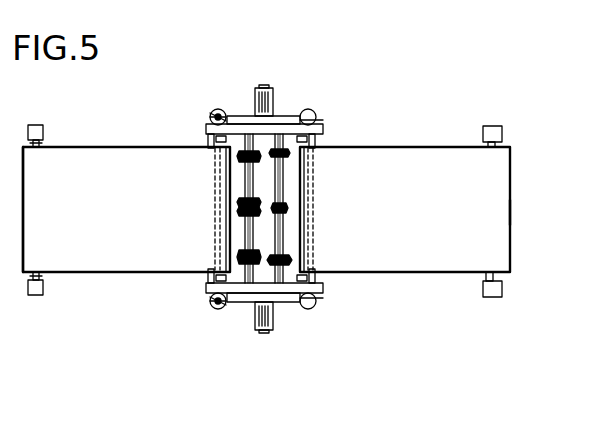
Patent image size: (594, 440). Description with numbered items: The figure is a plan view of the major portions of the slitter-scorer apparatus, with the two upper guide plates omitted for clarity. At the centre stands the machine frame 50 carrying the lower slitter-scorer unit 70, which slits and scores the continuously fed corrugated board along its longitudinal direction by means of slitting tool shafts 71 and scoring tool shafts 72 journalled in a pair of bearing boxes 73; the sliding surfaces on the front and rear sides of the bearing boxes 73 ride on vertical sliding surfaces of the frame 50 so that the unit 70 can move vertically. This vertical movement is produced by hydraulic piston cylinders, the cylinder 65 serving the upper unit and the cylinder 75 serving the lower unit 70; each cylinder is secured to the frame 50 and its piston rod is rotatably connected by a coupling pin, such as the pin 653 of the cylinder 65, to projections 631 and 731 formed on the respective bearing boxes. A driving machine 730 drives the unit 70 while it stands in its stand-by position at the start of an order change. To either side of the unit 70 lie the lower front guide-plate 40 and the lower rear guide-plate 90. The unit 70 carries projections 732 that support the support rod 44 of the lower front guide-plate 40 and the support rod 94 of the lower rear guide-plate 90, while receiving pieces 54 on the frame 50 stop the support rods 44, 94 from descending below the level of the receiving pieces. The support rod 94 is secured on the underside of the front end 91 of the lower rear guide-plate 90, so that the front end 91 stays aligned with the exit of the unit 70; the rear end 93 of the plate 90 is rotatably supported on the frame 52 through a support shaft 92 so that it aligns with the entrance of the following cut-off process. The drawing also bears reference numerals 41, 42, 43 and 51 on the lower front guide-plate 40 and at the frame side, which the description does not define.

The lower front guide-plate 40 is at (106, 158).
The panel plate 41 is at (25, 207).
The pivot pin 42 is at (38, 150).
The lower coupling 43 is at (243, 214).
The support rod 44 is at (243, 200).
The machine frame 50 is at (324, 129).
The left bracket 51 is at (39, 129).
The frame 52 is at (483, 131).
The receiving pieces 54 is at (206, 140).
The hydraulic piston cylinder 65 is at (205, 112).
The lower slitter-scorer unit 70 is at (292, 242).
The slitting tool shafts 71 is at (290, 168).
The scoring tool shafts 72 is at (245, 168).
The bearing boxes 73 is at (250, 120).
The hydraulic piston cylinder 75 is at (322, 121).
The lower rear guide-plate 90 is at (437, 265).
The front end 91 is at (290, 207).
The support shaft 92 is at (508, 160).
The rear end 93 is at (500, 213).
The support rod 94 is at (290, 180).
The projections 631 is at (215, 110).
The coupling pin 653 is at (208, 124).
The driving machine 730 is at (268, 88).
The projections 731 is at (303, 108).
The projections 732 is at (206, 146).